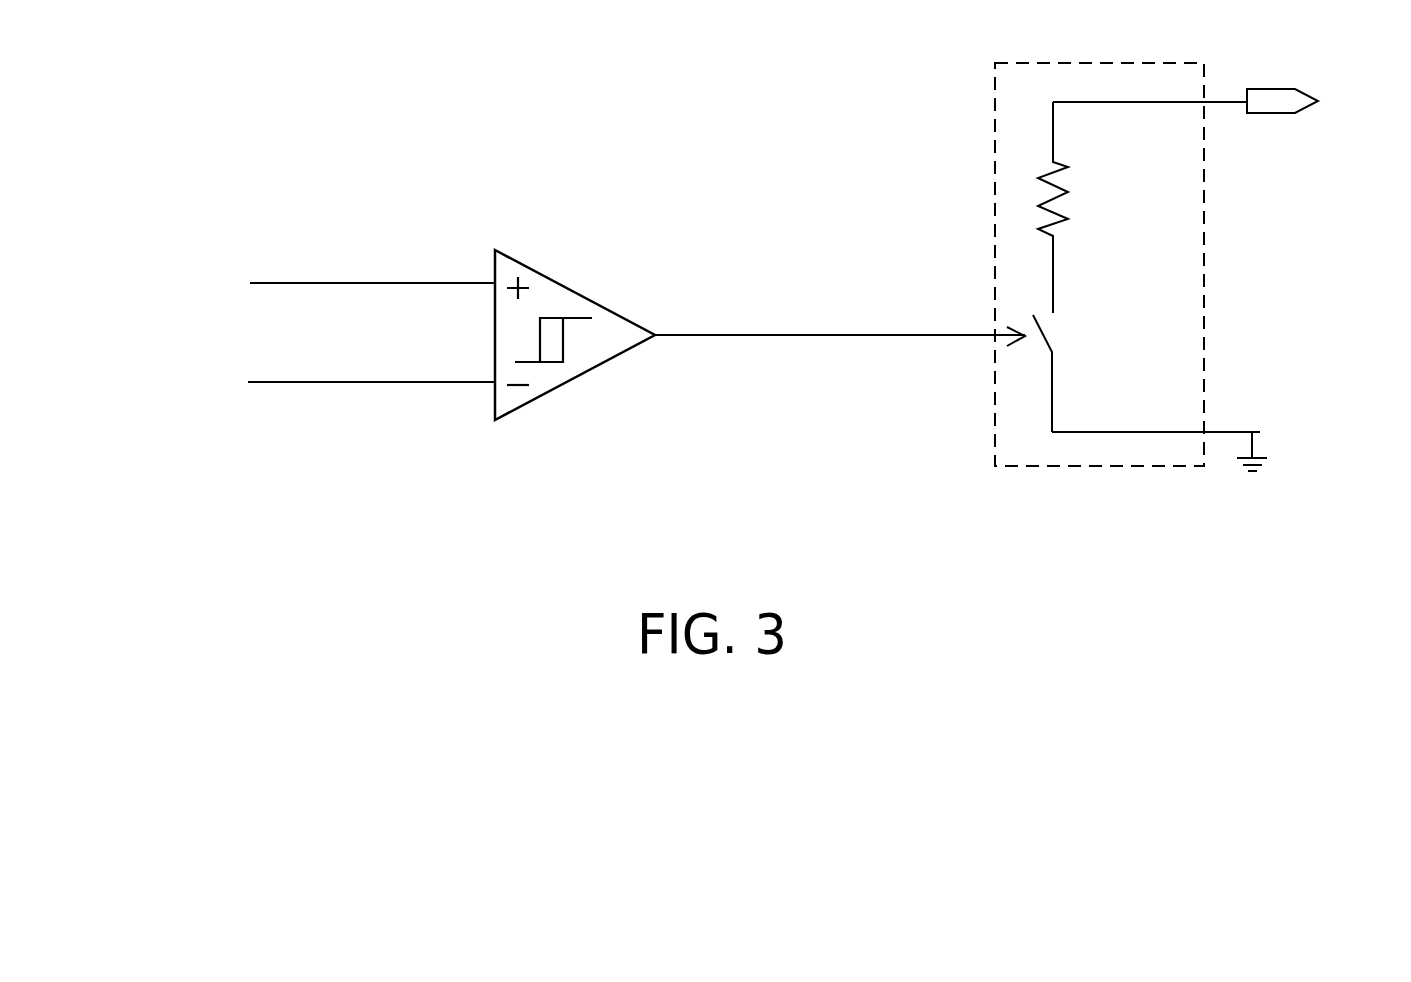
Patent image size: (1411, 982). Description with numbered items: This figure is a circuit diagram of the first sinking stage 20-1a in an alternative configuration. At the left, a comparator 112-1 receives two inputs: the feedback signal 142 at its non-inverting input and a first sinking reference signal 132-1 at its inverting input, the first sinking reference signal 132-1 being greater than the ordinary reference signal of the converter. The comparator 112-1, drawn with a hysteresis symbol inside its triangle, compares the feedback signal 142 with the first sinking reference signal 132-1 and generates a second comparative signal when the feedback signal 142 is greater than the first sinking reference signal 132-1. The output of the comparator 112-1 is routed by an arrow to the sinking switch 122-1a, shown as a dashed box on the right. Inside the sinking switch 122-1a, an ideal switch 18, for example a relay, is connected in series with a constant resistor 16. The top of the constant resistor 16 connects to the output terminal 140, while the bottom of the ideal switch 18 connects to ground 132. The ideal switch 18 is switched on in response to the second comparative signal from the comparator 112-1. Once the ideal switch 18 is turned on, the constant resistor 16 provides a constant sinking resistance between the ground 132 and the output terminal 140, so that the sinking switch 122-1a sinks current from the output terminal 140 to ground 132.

The first sinking stage 20-1a is at (256, 104).
The feedback signal 142 is at (276, 287).
The first sinking reference signal 132-1 is at (296, 382).
The comparator 112-1 is at (597, 300).
The sinking switch 122-1a is at (995, 118).
The constant resistor 16 is at (1067, 192).
The ideal switch 18 is at (1053, 363).
The output terminal 140 is at (1221, 99).
The ground 132 is at (1260, 431).